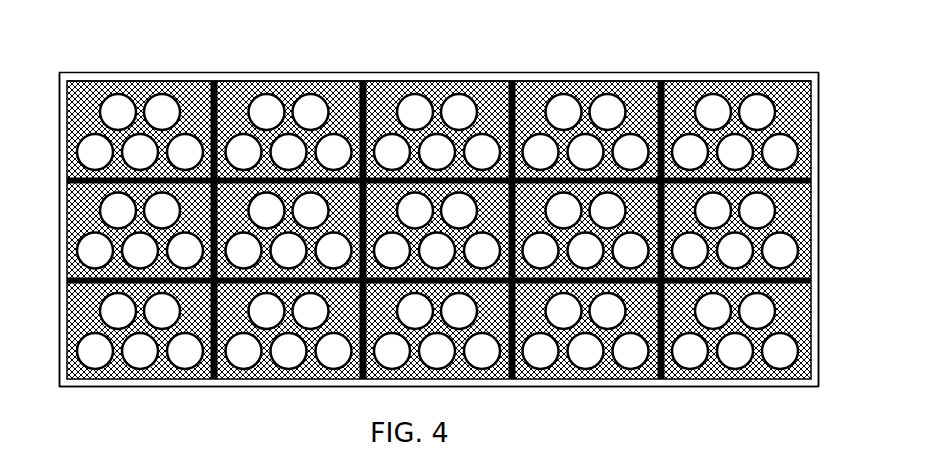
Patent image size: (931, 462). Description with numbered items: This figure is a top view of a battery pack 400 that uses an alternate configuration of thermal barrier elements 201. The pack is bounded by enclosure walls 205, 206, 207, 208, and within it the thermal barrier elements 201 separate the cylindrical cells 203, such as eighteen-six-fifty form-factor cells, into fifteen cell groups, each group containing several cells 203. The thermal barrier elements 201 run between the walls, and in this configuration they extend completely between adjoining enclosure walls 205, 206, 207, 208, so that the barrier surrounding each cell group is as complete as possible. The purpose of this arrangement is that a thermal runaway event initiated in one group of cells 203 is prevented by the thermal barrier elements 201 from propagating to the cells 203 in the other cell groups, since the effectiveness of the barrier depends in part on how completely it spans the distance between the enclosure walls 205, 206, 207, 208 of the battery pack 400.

The battery pack 400 is at (765, 62).
The thermal barrier elements 201 is at (357, 100).
The cells 203 is at (413, 110).
The enclosure wall 205 is at (196, 80).
The enclosure wall 206 is at (815, 320).
The enclosure wall 207 is at (247, 386).
The enclosure wall 208 is at (60, 142).